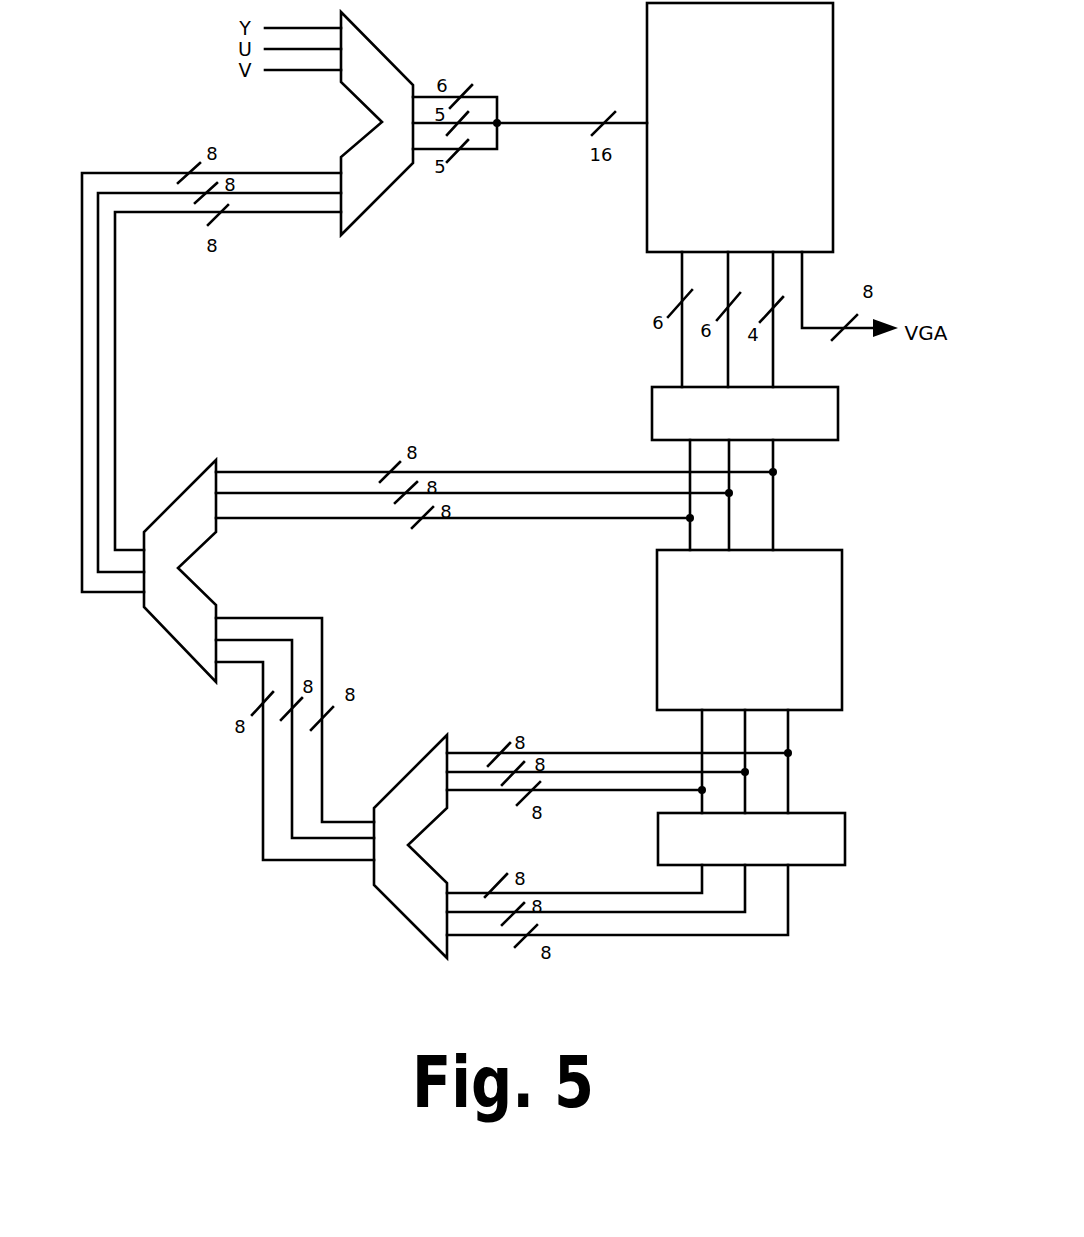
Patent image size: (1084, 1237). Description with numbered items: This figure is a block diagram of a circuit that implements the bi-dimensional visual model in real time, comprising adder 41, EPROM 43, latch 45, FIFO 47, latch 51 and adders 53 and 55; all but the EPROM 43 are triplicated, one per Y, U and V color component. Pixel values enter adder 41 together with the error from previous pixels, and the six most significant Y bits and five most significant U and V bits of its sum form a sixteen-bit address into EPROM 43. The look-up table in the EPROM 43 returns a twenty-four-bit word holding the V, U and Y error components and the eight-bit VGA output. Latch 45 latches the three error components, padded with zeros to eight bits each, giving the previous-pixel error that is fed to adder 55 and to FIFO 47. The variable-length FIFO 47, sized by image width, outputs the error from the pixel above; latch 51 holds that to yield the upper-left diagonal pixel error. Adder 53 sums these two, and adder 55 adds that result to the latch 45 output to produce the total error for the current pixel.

The adder 41 is at (370, 195).
The EPROM 43 is at (833, 177).
The latch 45 is at (838, 420).
The FIFO 47 is at (657, 620).
The latch 51 is at (820, 860).
The adder 53 is at (380, 893).
The adder 55 is at (182, 645).